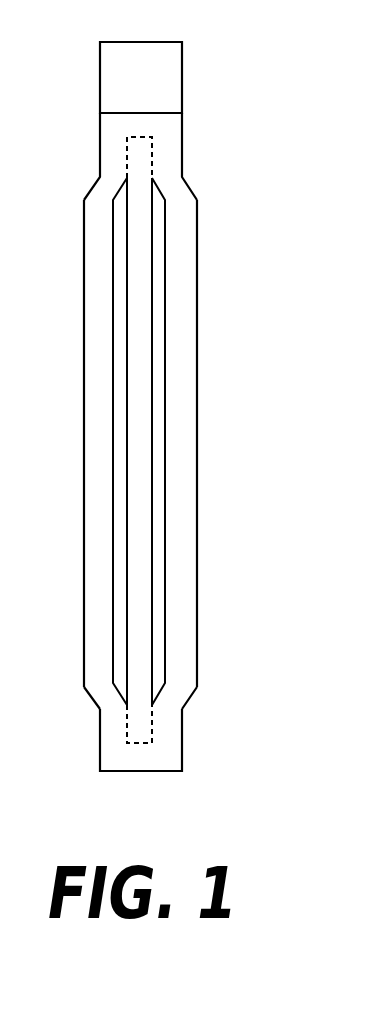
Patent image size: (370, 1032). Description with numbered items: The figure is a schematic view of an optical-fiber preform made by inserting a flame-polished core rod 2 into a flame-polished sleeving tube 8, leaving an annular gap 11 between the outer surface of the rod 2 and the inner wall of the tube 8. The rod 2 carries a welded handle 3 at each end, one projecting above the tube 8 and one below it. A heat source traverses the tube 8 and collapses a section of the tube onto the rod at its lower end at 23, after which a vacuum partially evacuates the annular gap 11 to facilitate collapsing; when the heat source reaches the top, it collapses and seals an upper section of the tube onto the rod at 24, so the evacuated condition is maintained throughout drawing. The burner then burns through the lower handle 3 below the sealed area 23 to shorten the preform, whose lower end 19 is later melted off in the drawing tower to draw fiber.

The welded handle 3 is at (165, 69).
The upper collapsed and sealed section 24 is at (163, 157).
The core rod 2 is at (138, 222).
The sleeving tube 8 is at (100, 352).
The annular gap 11 is at (122, 487).
The lower collapsed section 23 is at (152, 721).
The lower end of the preform 19 is at (168, 756).